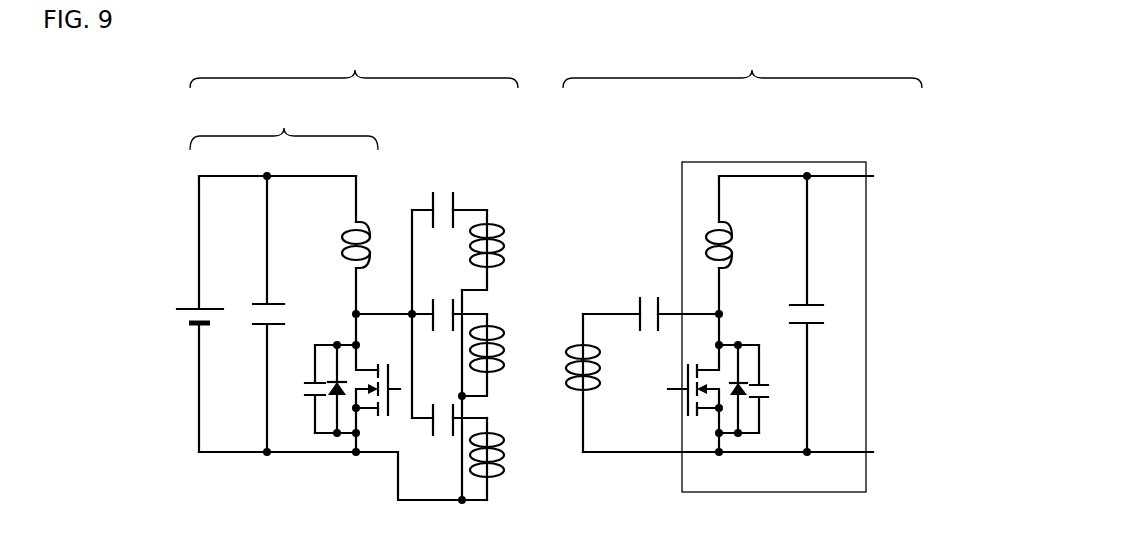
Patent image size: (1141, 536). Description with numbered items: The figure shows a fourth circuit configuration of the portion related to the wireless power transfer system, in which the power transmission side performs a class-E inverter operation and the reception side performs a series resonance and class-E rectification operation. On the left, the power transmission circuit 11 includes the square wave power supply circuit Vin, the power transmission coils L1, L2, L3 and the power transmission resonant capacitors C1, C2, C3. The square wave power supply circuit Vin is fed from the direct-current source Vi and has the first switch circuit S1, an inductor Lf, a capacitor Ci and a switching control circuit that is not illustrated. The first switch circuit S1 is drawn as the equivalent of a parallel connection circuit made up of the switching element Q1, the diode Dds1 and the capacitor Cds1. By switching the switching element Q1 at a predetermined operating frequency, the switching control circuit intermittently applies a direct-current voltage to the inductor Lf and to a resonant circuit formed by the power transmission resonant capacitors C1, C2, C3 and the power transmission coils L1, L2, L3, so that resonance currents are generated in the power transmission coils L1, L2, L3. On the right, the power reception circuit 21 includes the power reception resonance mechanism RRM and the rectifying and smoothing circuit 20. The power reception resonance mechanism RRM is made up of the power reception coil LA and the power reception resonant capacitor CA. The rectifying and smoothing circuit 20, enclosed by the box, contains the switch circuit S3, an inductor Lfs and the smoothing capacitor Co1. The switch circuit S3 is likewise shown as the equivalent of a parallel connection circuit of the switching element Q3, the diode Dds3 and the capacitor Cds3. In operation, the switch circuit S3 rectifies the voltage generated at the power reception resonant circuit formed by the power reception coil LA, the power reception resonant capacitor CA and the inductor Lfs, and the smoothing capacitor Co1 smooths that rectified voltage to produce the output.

The power transmission circuit 11 is at (354, 60).
The power reception circuit 21 is at (742, 60).
The rectifying and smoothing circuit 20 is at (860, 162).
The square wave power supply circuit Vin is at (284, 124).
The input DC voltage source Vi is at (194, 314).
The capacitor Ci is at (277, 314).
The inductor Lf is at (342, 260).
The switching element Q1 is at (376, 394).
The capacitor Cds1 is at (298, 389).
The diode Dds1 is at (333, 414).
The first switch circuit S1 is at (300, 438).
The power transmission resonant capacitor C1 is at (449, 196).
The power transmission resonant capacitor C2 is at (449, 302).
The power transmission resonant capacitor C3 is at (449, 407).
The power transmission coil L1 is at (495, 242).
The power transmission coil L2 is at (493, 348).
The power transmission coil L3 is at (499, 452).
The power reception coil LA is at (565, 383).
The power reception resonant capacitor CA is at (653, 299).
The inductor Lfs is at (733, 260).
The smoothing capacitor Co1 is at (822, 314).
The switching element Q3 is at (695, 394).
The capacitor Cds3 is at (777, 389).
The diode Dds3 is at (749, 413).
The power reception resonance mechanism RRM is at (614, 405).
The switch circuit S3 is at (688, 434).